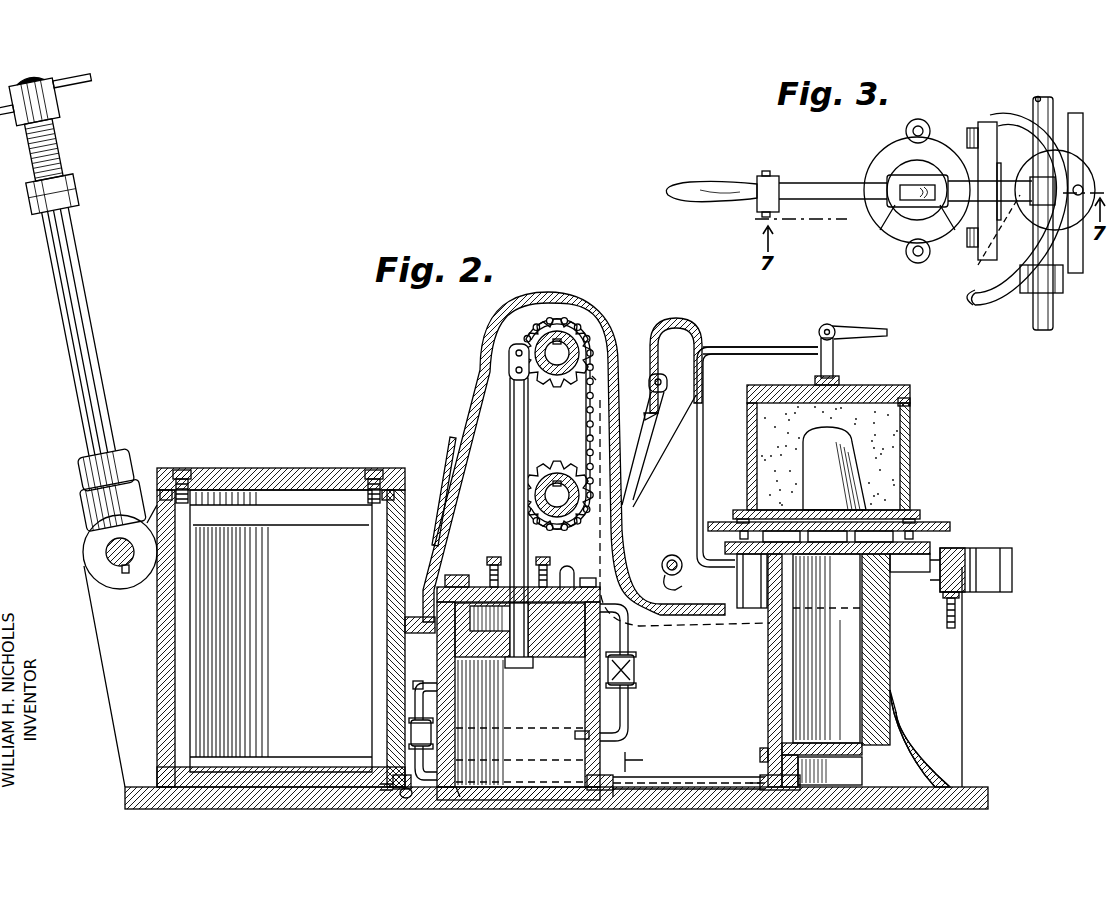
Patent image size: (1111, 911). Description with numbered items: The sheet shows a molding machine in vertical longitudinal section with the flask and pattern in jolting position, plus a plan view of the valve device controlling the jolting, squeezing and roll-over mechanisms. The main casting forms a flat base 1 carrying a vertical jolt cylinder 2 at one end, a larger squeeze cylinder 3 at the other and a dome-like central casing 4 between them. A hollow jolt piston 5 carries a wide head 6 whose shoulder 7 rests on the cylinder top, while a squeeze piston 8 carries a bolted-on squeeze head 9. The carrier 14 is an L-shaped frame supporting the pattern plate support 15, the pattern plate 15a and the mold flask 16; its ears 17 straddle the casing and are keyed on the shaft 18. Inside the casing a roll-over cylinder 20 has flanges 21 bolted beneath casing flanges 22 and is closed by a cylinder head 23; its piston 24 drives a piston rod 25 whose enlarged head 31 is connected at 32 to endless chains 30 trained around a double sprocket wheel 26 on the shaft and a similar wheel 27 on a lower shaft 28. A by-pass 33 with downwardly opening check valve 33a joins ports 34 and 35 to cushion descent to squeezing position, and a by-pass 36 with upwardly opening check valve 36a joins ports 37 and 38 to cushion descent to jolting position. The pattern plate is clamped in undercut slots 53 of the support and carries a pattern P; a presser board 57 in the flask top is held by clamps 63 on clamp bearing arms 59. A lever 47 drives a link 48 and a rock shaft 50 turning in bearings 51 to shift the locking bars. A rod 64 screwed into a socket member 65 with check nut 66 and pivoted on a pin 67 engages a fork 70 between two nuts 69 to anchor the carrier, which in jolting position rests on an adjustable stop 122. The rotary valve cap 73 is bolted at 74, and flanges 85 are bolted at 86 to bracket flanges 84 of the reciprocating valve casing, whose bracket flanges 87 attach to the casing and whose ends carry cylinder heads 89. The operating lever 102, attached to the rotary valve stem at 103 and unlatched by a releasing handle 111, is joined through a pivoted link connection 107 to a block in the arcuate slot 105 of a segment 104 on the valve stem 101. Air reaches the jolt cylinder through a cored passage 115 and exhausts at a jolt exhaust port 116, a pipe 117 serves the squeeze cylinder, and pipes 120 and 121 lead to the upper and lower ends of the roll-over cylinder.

In FIG. 2, the base 1 is at (125, 800).
In FIG. 2, the jolt cylinder 2 is at (890, 645).
In FIG. 2, the squeeze cylinder 3 is at (158, 675).
In FIG. 2, the central casing 4 is at (468, 370).
In FIG. 2, the jolt piston 5 is at (876, 668).
In FIG. 2, the jolt head 6 is at (985, 592).
In FIG. 2, the shoulder 7 is at (870, 565).
In FIG. 2, the squeeze piston 8 is at (185, 627).
In FIG. 2, the squeeze head 9 is at (258, 452).
In FIG. 2, the carrier 14 is at (697, 325).
In FIG. 2, the pattern plate support 15 is at (920, 525).
In FIG. 2, the pattern plate 15a is at (915, 512).
In FIG. 2, the mold flask 16 is at (910, 432).
In FIG. 2, the ears 17 is at (620, 320).
In FIG. 2, the shaft 18 is at (563, 345).
In FIG. 2, the roll-over cylinder 20 is at (600, 700).
In FIG. 2, the flanges 21 is at (410, 795).
In FIG. 2, the flanges 22 is at (410, 733).
In FIG. 2, the cylinder head 23 is at (467, 588).
In FIG. 2, the piston 24 is at (437, 662).
In FIG. 2, the piston rod 25 is at (514, 502).
In FIG. 2, the double sprocket wheel 26 is at (548, 318).
In FIG. 2, the sprocket wheel 27 is at (568, 572).
In FIG. 2, the shaft 28 is at (540, 483).
In FIG. 2, the endless chains 30 is at (592, 378).
In FIG. 2, the enlarged head 31 is at (510, 362).
In FIG. 2, the chain connection 32 is at (512, 350).
In FIG. 2, the by-pass connection 33 is at (420, 688).
In FIG. 2, the check valve 33a is at (412, 735).
In FIG. 2, the port 34 is at (470, 688).
In FIG. 2, the port 35 is at (460, 797).
In FIG. 2, the by-pass 36 is at (630, 718).
In FIG. 2, the check valve 36a is at (630, 656).
In FIG. 2, the port 37 is at (600, 735).
In FIG. 2, the port 38 is at (590, 584).
In FIG. 2, the lever 47 is at (659, 374).
In FIG. 2, the link 48 is at (660, 410).
In FIG. 2, the rock shaft 50 is at (687, 590).
In FIG. 2, the bearings 51 is at (672, 555).
In FIG. 2, the undercut slots 53 is at (740, 518).
In FIG. 2, the presser board 57 is at (875, 395).
In FIG. 2, the clamp bearing arms 59 is at (748, 353).
In FIG. 2, the clamps 63 is at (832, 325).
In FIG. 2, the rod 64 is at (99, 327).
In FIG. 2, the socket member 65 is at (128, 480).
In FIG. 2, the check nut 66 is at (106, 452).
In FIG. 2, the pin 67 is at (106, 544).
In FIG. 2, the nuts 69 is at (63, 142).
In FIG. 2, the fork 70 is at (985, 548).
In FIG. 3, the cap 73 is at (905, 152).
In FIG. 3, the bolts 74 is at (920, 120).
In FIG. 3, the bracket flanges 84 is at (1005, 112).
In FIG. 3, the flanges 85 is at (987, 122).
In FIG. 3, the bolts 86 is at (967, 137).
In FIG. 3, the bracket flanges 87 is at (1080, 130).
In FIG. 3, the cylinder heads 89 is at (1058, 295).
In FIG. 3, the operating stem 101 is at (985, 266).
In FIG. 3, the operating lever 102 is at (803, 182).
In FIG. 3, the lever attachment 103 is at (905, 218).
In FIG. 3, the arcuate segment 104 is at (1000, 300).
In FIG. 3, the arcuate slot 105 is at (975, 300).
In FIG. 3, the pivoted link connection 107 is at (1050, 178).
In FIG. 3, the releasing handle 111 is at (740, 205).
In FIG. 2, the cored out passage 115 is at (765, 778).
In FIG. 2, the jolt exhaust port 116 is at (775, 755).
In FIG. 2, the pipe 117 is at (400, 797).
In FIG. 2, the pipe 120 is at (543, 565).
In FIG. 3, the pipe 120 is at (1040, 97).
In FIG. 2, the pipe 121 is at (615, 792).
In FIG. 2, the adjustable stop 122 is at (957, 600).
In FIG. 2, the pattern P is at (834, 468).